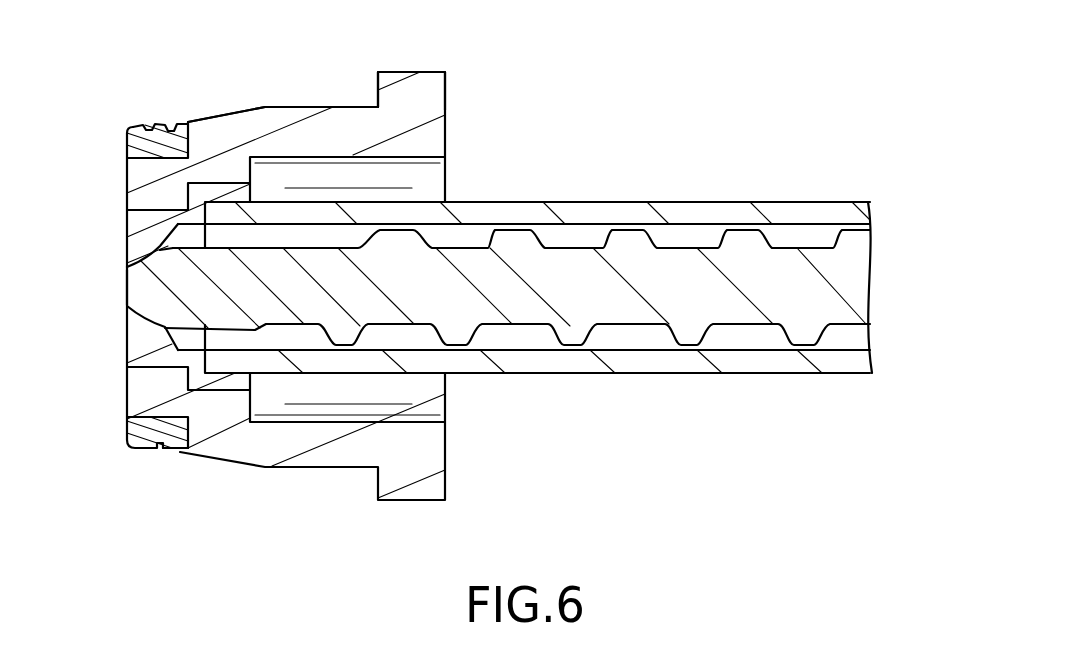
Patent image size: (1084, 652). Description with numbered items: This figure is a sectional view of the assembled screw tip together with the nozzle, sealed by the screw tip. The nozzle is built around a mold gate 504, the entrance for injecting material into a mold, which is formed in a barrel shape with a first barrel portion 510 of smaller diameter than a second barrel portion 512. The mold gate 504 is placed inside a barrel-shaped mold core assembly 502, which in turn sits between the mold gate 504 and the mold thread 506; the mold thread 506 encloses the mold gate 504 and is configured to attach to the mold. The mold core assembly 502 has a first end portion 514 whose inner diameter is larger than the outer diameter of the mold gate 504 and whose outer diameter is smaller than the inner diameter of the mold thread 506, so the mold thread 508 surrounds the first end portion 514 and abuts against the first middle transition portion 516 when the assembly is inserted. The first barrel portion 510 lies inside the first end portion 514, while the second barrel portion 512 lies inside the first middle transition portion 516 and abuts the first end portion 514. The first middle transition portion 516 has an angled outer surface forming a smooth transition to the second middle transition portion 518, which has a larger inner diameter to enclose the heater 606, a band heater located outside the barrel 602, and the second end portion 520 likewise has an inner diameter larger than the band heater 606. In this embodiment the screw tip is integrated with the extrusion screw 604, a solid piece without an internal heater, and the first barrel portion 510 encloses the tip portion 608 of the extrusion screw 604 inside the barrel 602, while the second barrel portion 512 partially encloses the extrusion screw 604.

The mold core assembly 502 is at (306, 498).
The mold gate 504 is at (106, 342).
The mold thread 506 is at (133, 473).
The mold thread 508 is at (152, 127).
The first barrel portion 510 is at (147, 368).
The second barrel portion 512 is at (215, 393).
The first end portion 514 is at (138, 182).
The first middle transition portion 516 is at (222, 125).
The second middle transition portion 518 is at (330, 115).
The second end portion 520 is at (412, 85).
The barrel 602 is at (662, 203).
The extrusion screw 604 is at (740, 277).
The heater 606 is at (428, 182).
The tip portion 608 is at (138, 288).